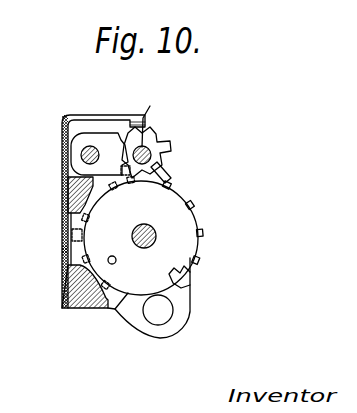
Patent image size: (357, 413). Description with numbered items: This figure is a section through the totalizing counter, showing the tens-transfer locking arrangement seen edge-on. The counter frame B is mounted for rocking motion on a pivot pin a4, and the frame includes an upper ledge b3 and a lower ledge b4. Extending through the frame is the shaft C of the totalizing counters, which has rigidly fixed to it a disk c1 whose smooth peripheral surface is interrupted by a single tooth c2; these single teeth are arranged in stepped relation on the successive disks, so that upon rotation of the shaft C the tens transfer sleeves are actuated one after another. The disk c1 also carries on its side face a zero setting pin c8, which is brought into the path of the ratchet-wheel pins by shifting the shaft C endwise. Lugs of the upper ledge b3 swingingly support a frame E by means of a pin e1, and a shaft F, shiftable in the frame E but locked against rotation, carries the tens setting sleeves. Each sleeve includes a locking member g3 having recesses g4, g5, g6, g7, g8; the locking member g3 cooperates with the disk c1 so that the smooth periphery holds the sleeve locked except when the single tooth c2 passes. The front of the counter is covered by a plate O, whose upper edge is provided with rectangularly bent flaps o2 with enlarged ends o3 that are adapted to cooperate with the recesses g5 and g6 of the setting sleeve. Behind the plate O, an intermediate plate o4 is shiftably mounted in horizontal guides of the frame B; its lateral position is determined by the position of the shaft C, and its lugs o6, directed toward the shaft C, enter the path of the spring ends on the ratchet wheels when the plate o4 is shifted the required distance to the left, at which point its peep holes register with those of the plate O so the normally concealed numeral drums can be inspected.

The plate O is at (62, 140).
The rectangularly bent flaps o2 is at (138, 118).
The enlarged ends o3 is at (150, 126).
The intermediate plate o4 is at (64, 252).
The lugs o6 is at (82, 233).
The frame E is at (112, 140).
The shaft F is at (152, 114).
The locking member g3 is at (168, 142).
The recess g4 is at (163, 165).
The recess g5 is at (153, 127).
The recess g6 is at (112, 142).
The recess g7 is at (142, 164).
The recess g8 is at (192, 204).
The pin e1 is at (84, 158).
The upper ledge b3 is at (70, 188).
The ledge b4 is at (70, 295).
The shaft C is at (165, 226).
The disks c1 is at (115, 309).
The single tooth c2 is at (198, 262).
The zero setting pins c8 is at (133, 263).
The frame B is at (184, 301).
The pivot pin a4 is at (155, 321).